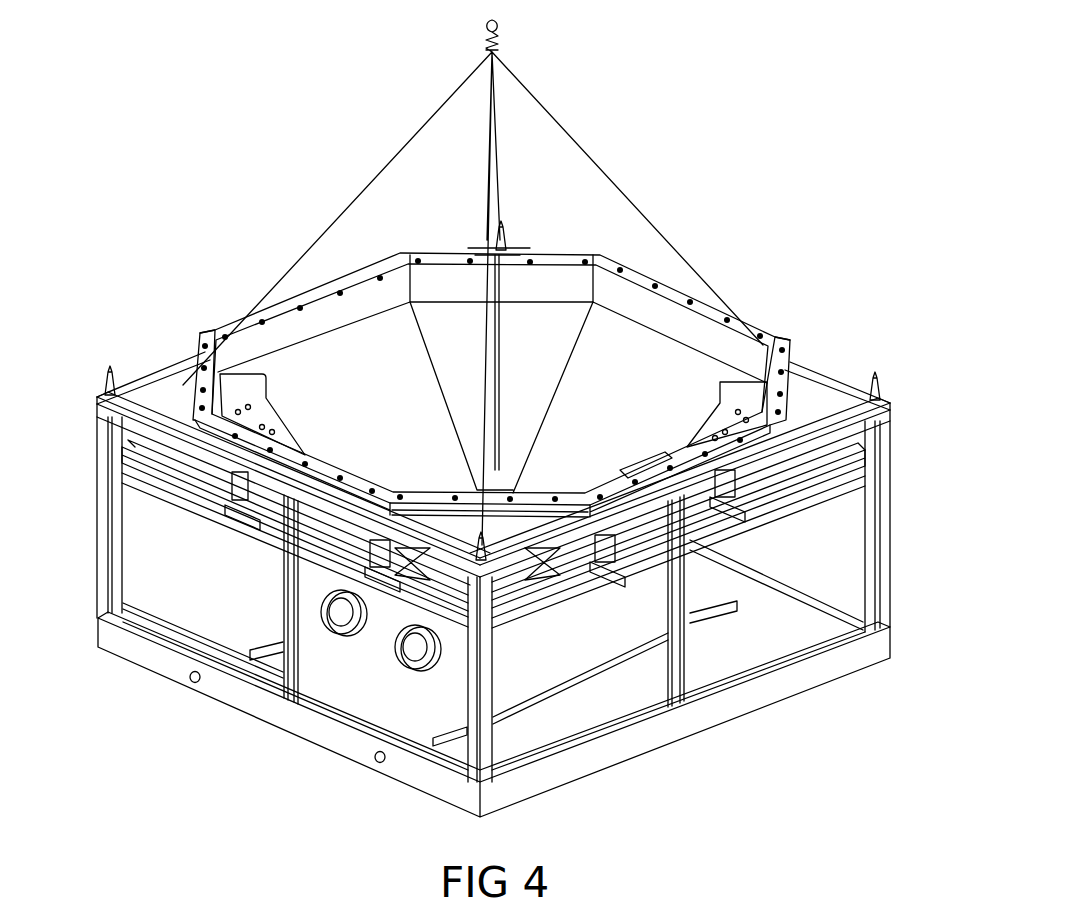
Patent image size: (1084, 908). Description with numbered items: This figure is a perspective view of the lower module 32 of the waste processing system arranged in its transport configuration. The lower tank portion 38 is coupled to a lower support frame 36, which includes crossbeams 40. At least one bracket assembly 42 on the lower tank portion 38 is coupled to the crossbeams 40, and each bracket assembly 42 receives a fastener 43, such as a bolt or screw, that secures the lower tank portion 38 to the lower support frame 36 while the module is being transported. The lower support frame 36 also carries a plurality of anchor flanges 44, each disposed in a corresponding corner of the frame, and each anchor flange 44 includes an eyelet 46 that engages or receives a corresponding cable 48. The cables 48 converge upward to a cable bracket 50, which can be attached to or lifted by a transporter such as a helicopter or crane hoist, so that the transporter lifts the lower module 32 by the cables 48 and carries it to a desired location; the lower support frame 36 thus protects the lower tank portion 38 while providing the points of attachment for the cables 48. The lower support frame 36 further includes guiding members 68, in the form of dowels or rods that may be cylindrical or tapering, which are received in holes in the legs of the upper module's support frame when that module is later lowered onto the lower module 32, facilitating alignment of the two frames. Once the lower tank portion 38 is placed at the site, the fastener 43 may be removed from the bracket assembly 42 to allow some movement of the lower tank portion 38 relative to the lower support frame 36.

The lower module 32 is at (737, 250).
The lower support frame 36 is at (885, 558).
The lower tank portion 38 is at (640, 295).
The crossbeams 40 is at (253, 518).
The bracket assembly 42 is at (237, 490).
The fastener 43 is at (240, 487).
The anchor flange 44 is at (135, 447).
The eyelet 46 is at (140, 458).
The cable 48 is at (372, 180).
The cable bracket 50 is at (497, 48).
The guiding member 68 is at (505, 230).